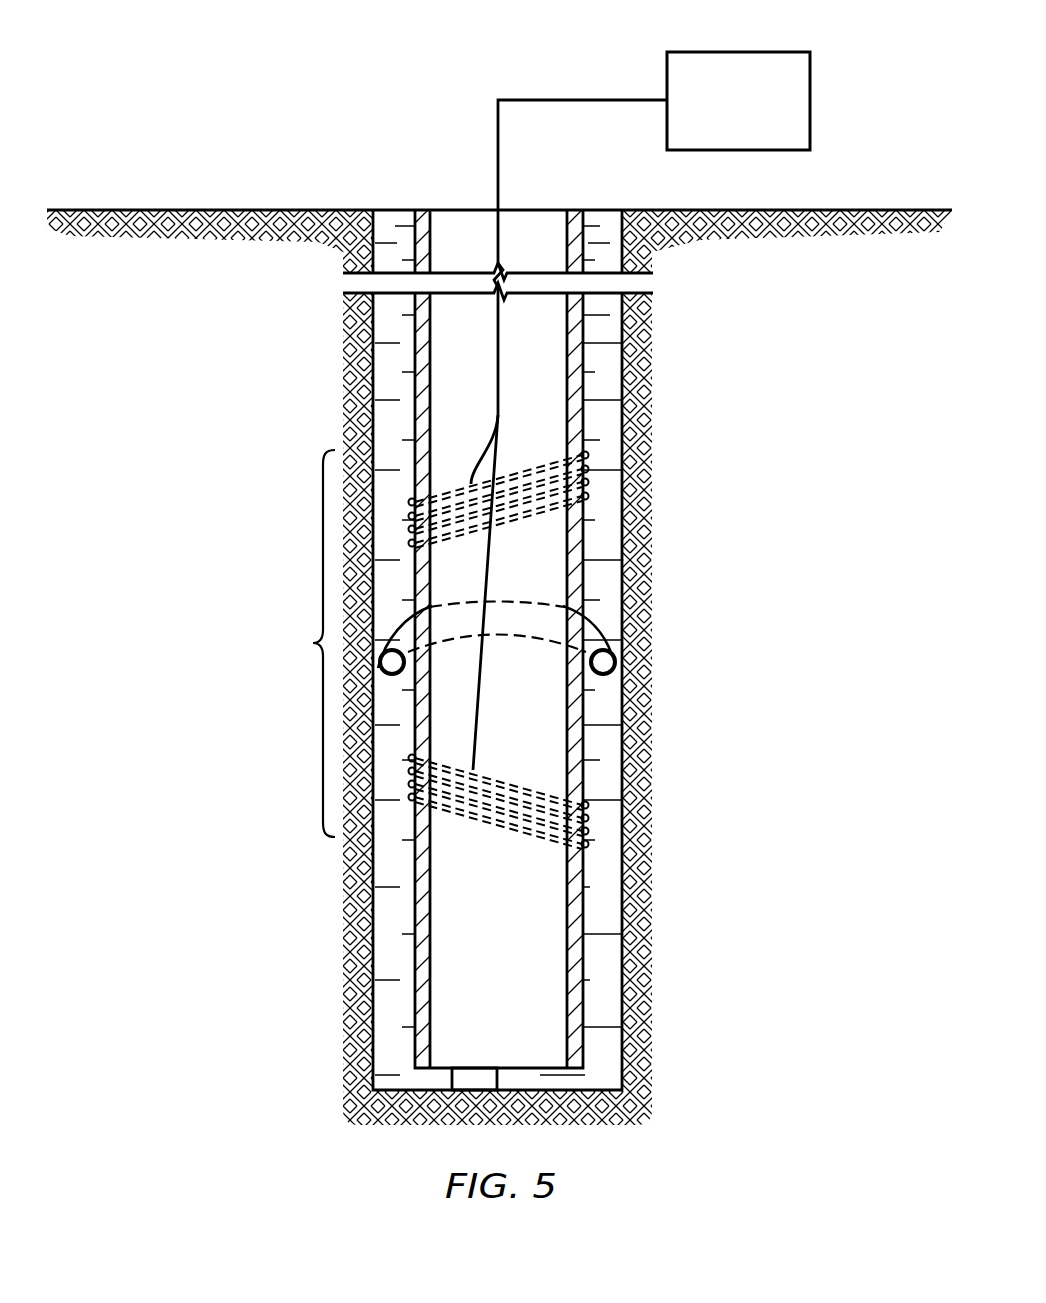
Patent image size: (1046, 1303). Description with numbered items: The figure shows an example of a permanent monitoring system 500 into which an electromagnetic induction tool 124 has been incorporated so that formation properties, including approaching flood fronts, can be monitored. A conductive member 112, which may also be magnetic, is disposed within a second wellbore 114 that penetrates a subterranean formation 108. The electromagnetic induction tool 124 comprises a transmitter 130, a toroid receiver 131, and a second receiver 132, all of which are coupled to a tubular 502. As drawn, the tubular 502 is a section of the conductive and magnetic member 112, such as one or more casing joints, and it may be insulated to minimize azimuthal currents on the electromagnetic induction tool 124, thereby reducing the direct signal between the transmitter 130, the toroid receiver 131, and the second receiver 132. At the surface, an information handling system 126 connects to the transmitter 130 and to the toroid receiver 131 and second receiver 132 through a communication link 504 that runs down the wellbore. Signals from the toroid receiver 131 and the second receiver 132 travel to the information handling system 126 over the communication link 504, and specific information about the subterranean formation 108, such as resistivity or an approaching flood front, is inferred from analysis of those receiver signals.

The subterranean formation 108 is at (729, 258).
The conductive member 112 is at (412, 218).
The second wellbore 114 is at (622, 362).
The electromagnetic induction tool 124 is at (314, 643).
The information handling system 126 is at (755, 115).
The transmitter 130 is at (588, 482).
The toroid receiver 131 is at (600, 632).
The second receiver 132 is at (588, 805).
The permanent monitoring system 500 is at (656, 332).
The tubular 502 is at (415, 358).
The communication link 504 is at (528, 100).